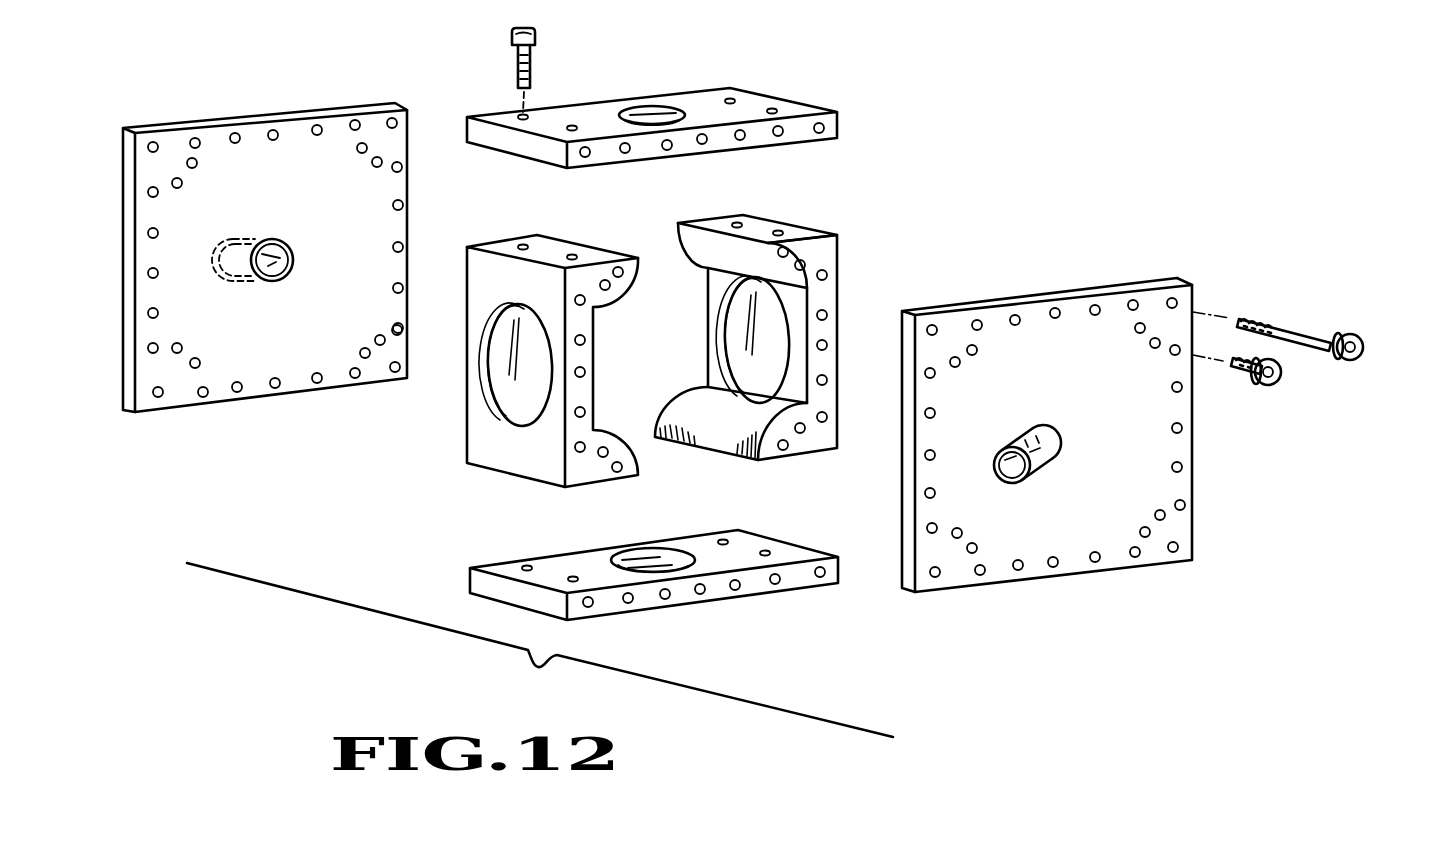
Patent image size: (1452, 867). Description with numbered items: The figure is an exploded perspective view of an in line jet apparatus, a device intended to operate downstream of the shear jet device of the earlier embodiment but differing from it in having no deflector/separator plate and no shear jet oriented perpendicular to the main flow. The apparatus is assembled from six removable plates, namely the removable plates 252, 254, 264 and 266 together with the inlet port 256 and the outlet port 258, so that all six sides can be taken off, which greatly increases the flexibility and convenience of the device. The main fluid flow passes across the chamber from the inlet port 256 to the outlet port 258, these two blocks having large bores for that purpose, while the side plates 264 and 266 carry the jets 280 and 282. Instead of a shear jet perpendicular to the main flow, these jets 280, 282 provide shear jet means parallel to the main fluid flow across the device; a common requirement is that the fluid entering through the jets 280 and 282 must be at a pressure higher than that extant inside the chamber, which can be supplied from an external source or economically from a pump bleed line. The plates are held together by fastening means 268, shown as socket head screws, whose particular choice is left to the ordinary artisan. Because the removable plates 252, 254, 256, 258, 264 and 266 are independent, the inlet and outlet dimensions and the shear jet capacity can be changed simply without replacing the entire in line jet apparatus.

The removable plate 252 is at (652, 110).
The removable plate 254 is at (673, 567).
The inlet port 256 is at (503, 392).
The outlet port 258 is at (780, 333).
The removable plate 264 is at (1042, 288).
The removable plate 266 is at (252, 388).
The fastening means 268 is at (1370, 323).
The jet 280 is at (275, 277).
The jet 282 is at (1018, 474).